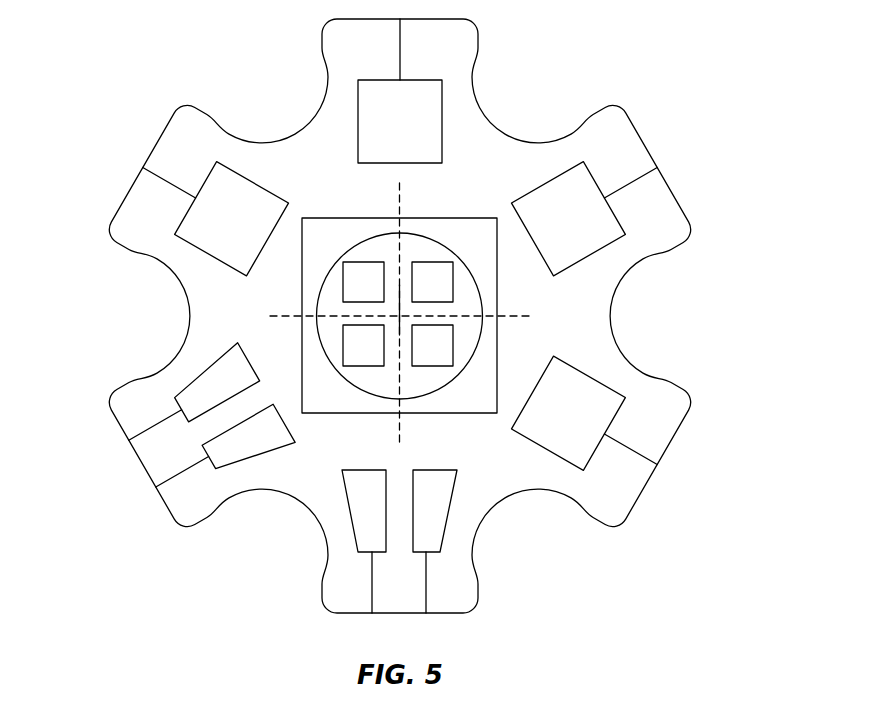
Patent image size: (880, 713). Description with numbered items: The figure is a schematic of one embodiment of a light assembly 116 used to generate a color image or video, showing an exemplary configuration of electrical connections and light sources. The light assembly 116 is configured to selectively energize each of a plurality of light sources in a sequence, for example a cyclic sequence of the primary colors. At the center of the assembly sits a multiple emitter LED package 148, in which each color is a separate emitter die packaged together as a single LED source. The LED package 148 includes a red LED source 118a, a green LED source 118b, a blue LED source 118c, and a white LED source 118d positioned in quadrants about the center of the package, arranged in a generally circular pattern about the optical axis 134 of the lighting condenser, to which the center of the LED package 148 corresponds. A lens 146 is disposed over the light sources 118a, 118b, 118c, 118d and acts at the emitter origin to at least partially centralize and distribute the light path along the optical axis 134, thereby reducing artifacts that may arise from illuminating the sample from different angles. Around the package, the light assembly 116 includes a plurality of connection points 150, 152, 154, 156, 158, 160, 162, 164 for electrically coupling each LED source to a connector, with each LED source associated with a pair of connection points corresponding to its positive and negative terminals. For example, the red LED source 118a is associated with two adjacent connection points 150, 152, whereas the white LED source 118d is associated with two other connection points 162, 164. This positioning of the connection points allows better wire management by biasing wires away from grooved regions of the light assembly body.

The light assembly 116 is at (181, 79).
The red LED source 118a is at (367, 277).
The green LED source 118b is at (432, 277).
The blue LED source 118c is at (433, 355).
The white LED source 118d is at (363, 352).
The optical axis 134 is at (401, 316).
The lens 146 is at (482, 341).
The LED package 148 is at (301, 294).
The connection point 150 is at (217, 229).
The connection point 152 is at (385, 132).
The connection point 154 is at (553, 229).
The connection point 156 is at (551, 423).
The connection point 158 is at (378, 530).
The connection point 160 is at (440, 492).
The connection point 162 is at (222, 372).
The connection point 164 is at (222, 447).